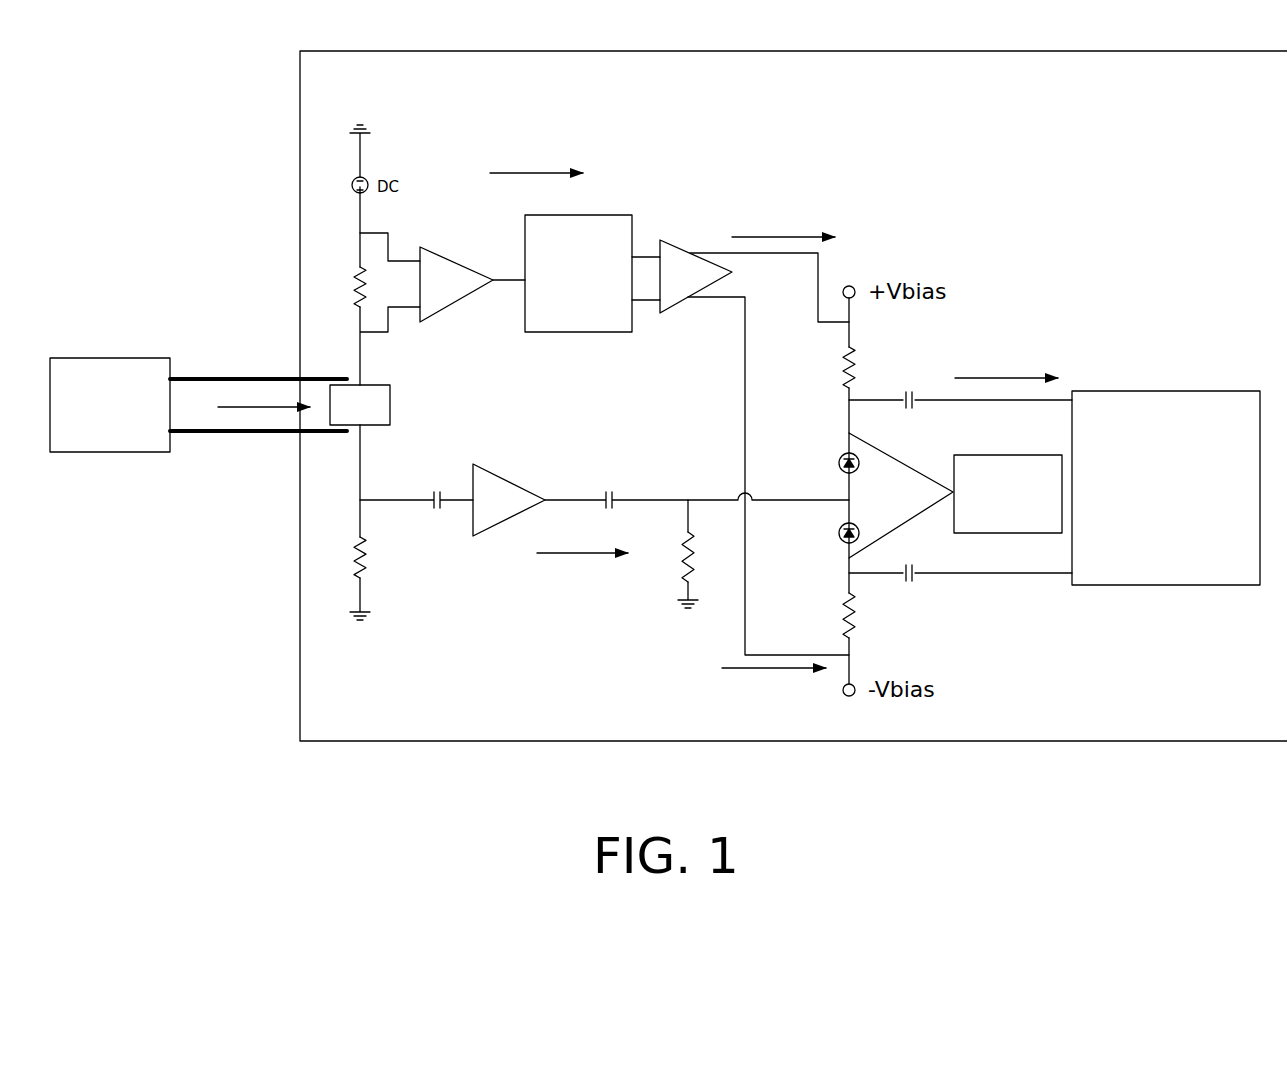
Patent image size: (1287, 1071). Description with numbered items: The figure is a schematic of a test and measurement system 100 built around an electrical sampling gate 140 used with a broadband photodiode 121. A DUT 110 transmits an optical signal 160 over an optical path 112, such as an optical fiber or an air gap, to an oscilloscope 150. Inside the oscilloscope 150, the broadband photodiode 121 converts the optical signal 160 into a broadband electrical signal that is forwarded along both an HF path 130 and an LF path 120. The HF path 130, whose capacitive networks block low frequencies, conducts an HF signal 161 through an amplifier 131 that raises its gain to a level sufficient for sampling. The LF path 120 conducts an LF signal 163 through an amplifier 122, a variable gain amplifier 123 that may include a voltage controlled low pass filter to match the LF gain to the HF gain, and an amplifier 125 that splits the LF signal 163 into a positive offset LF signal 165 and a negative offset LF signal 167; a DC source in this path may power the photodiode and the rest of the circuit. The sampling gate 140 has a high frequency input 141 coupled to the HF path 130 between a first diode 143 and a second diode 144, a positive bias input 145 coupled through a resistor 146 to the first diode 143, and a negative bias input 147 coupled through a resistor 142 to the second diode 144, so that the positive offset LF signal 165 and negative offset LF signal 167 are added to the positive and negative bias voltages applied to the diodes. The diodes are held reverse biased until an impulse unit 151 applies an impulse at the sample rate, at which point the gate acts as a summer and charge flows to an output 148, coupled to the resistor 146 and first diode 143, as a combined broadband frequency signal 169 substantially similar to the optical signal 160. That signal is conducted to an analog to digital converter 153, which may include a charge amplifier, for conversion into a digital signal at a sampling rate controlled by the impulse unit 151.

The test and measurement system 100 is at (125, 125).
The DUT 110 is at (166, 357).
The optical path 112 is at (286, 375).
The LF path 120 is at (652, 340).
The broadband photodiode 121 is at (398, 380).
The amplifier 122 is at (445, 249).
The variable gain amplifier 123 is at (565, 215).
The amplifier 125 is at (682, 243).
The HF path 130 is at (528, 453).
The amplifier 131 is at (512, 520).
The sampling gate 140 is at (935, 258).
The high frequency input 141 is at (836, 488).
The resistor 142 is at (866, 624).
The first diode 143 is at (838, 456).
The second diode 144 is at (838, 538).
The positive bias input 145 is at (826, 339).
The resistor 146 is at (860, 347).
The negative bias input 147 is at (836, 642).
The output 148 is at (875, 380).
The oscilloscope 150 is at (300, 132).
The impulse unit 151 is at (1005, 455).
The analog to digital converter 153 is at (1145, 588).
The optical signal 160 is at (253, 408).
The HF signal 161 is at (570, 557).
The LF signal 163 is at (490, 173).
The positive offset LF signal 165 is at (745, 237).
The negative offset LF signal 167 is at (724, 668).
The combined broadband frequency signal 169 is at (987, 378).